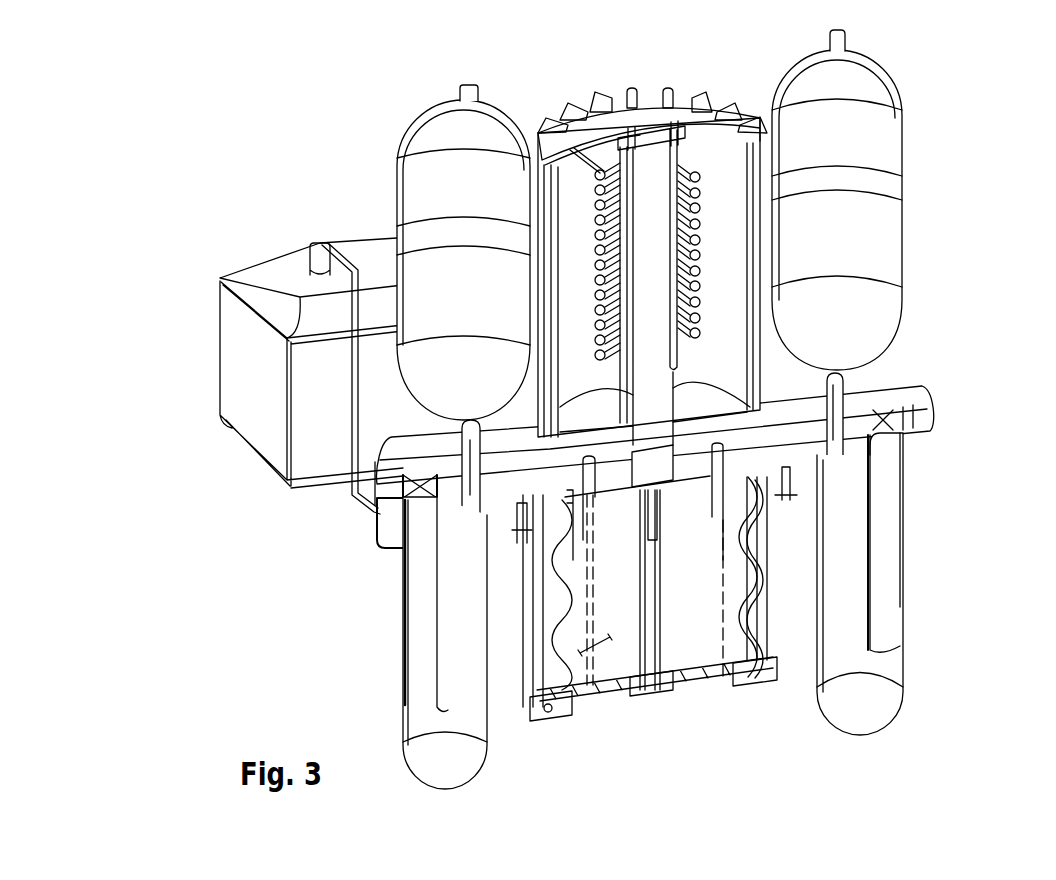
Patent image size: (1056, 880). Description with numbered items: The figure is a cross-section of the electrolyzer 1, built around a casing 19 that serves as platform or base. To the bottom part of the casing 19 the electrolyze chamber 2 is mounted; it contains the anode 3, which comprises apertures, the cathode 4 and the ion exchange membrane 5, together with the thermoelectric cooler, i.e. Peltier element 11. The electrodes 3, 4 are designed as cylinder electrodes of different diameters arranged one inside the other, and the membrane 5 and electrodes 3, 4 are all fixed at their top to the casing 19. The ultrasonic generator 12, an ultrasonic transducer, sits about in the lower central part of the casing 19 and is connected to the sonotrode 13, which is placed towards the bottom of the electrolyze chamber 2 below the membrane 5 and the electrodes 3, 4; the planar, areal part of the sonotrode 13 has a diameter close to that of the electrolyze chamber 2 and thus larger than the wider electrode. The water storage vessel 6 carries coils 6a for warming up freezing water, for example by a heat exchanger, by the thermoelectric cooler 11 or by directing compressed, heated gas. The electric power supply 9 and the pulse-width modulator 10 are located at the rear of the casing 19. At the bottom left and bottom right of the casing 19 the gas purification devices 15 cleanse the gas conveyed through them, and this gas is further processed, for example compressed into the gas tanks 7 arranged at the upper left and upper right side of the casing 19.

The electrolyzer 1 is at (582, 409).
The electrolyze chamber 2 is at (784, 611).
The anode 3 is at (887, 578).
The cathode 4 is at (748, 574).
The ion exchange membrane 5 is at (748, 607).
The water storage vessel 6 is at (460, 283).
The water storage vessel coils 6a is at (578, 290).
The gas tank 7 is at (478, 177).
The electric power supply 9 is at (317, 423).
The pulse-width modulator 10 is at (265, 278).
The thermoelectric cooler 11 is at (660, 680).
The ultrasonic generator 12 is at (653, 467).
The sonotrode 13 is at (550, 677).
The gas purification device 15 is at (462, 613).
The casing 19 is at (897, 397).